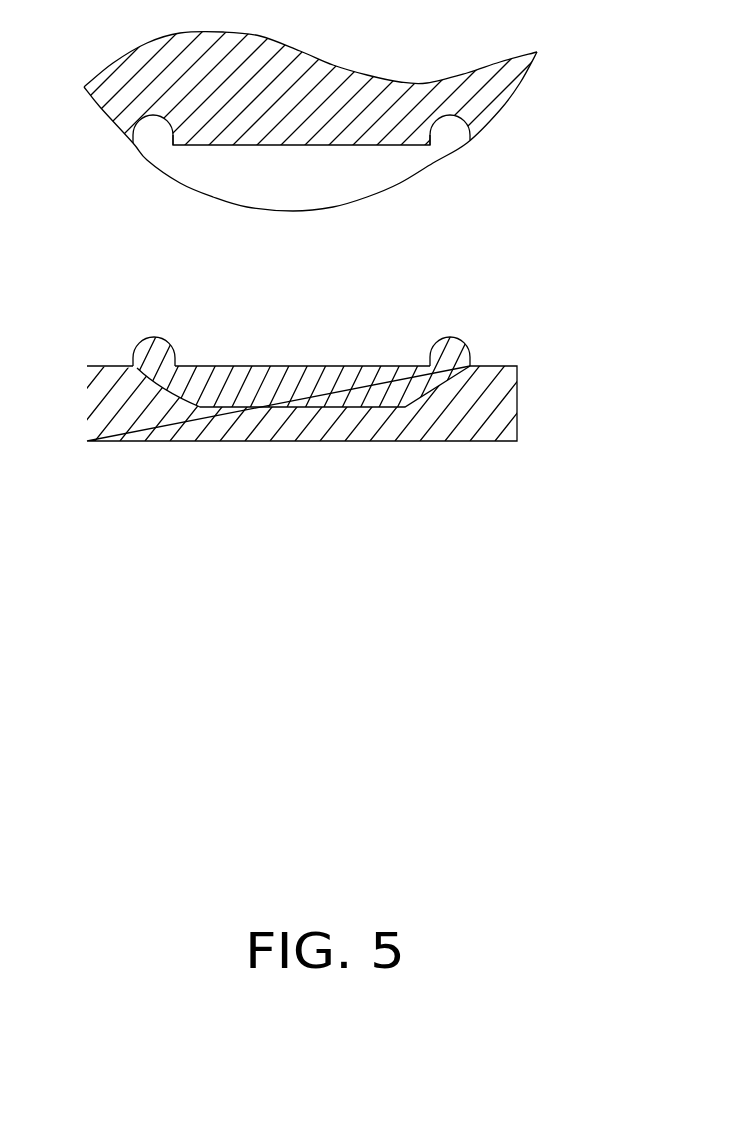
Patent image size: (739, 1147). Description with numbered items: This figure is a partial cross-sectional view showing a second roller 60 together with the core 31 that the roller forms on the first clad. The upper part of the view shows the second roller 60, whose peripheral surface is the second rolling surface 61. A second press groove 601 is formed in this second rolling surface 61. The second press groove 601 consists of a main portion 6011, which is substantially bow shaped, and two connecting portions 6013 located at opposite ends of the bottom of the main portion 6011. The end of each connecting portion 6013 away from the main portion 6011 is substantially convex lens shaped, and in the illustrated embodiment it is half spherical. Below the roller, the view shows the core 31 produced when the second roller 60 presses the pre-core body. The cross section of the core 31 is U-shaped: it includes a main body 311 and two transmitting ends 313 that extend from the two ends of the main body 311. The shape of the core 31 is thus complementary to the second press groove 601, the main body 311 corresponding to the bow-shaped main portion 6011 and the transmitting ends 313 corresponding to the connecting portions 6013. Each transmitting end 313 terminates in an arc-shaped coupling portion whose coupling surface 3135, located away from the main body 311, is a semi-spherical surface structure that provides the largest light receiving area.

The second roller 60 is at (490, 92).
The second press groove 601 is at (350, 137).
The main portion 6011 is at (407, 173).
The connecting portion 6013 is at (447, 135).
The second rolling surface 61 is at (150, 160).
The core 31 is at (268, 334).
The main body 311 is at (307, 383).
The transmitting end 313 is at (443, 350).
The coupling surface 3135 is at (155, 333).